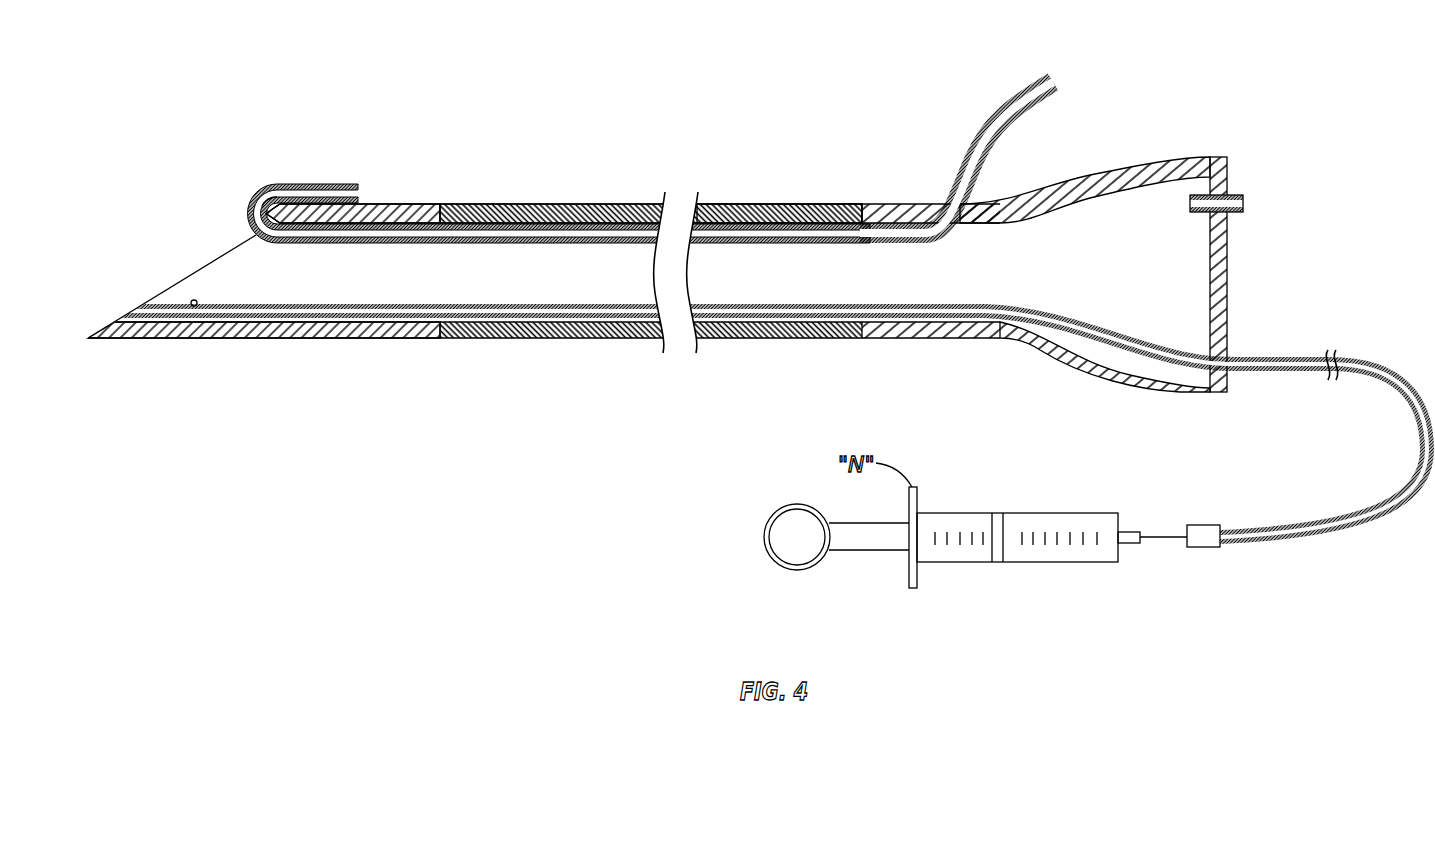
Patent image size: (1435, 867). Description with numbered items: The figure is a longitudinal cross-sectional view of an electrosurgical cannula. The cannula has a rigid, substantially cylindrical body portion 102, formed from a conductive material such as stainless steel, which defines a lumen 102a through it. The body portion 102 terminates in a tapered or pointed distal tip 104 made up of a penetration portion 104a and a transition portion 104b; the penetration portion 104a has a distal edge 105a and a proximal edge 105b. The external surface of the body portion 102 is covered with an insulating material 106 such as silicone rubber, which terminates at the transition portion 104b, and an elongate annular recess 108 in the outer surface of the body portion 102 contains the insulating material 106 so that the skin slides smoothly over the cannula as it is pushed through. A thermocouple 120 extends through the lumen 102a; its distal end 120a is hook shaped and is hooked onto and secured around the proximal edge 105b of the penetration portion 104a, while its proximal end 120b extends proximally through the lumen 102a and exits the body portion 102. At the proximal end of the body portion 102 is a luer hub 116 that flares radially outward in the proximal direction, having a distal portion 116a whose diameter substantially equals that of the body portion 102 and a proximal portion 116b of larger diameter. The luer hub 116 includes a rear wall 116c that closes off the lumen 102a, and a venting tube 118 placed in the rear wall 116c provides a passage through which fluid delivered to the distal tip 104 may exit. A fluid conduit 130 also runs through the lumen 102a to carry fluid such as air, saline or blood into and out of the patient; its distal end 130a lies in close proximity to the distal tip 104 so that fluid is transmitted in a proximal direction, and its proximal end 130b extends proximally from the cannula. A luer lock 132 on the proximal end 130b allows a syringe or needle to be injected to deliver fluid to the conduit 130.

The body portion 102 is at (720, 205).
The lumen 102a is at (1160, 248).
The distal tip 104 is at (595, 190).
The penetration portion 104a is at (208, 267).
The transition portion 104b is at (408, 203).
The distal edge 105a is at (107, 323).
The proximal edge 105b is at (262, 200).
The insulating material 106 is at (598, 204).
The elongate annular recess 108 is at (574, 204).
The luer hub 116 is at (1074, 267).
The distal portion 116a is at (903, 204).
The proximal portion 116b is at (1147, 167).
The rear wall 116c is at (1230, 300).
The venting tube 118 is at (1238, 196).
The thermocouple 120 is at (553, 197).
The distal end 120a is at (314, 184).
The proximal end 120b is at (1047, 80).
The fluid conduit 130 is at (773, 439).
The distal end 130a is at (195, 305).
The proximal end 130b is at (1305, 540).
The luer lock 132 is at (1210, 548).